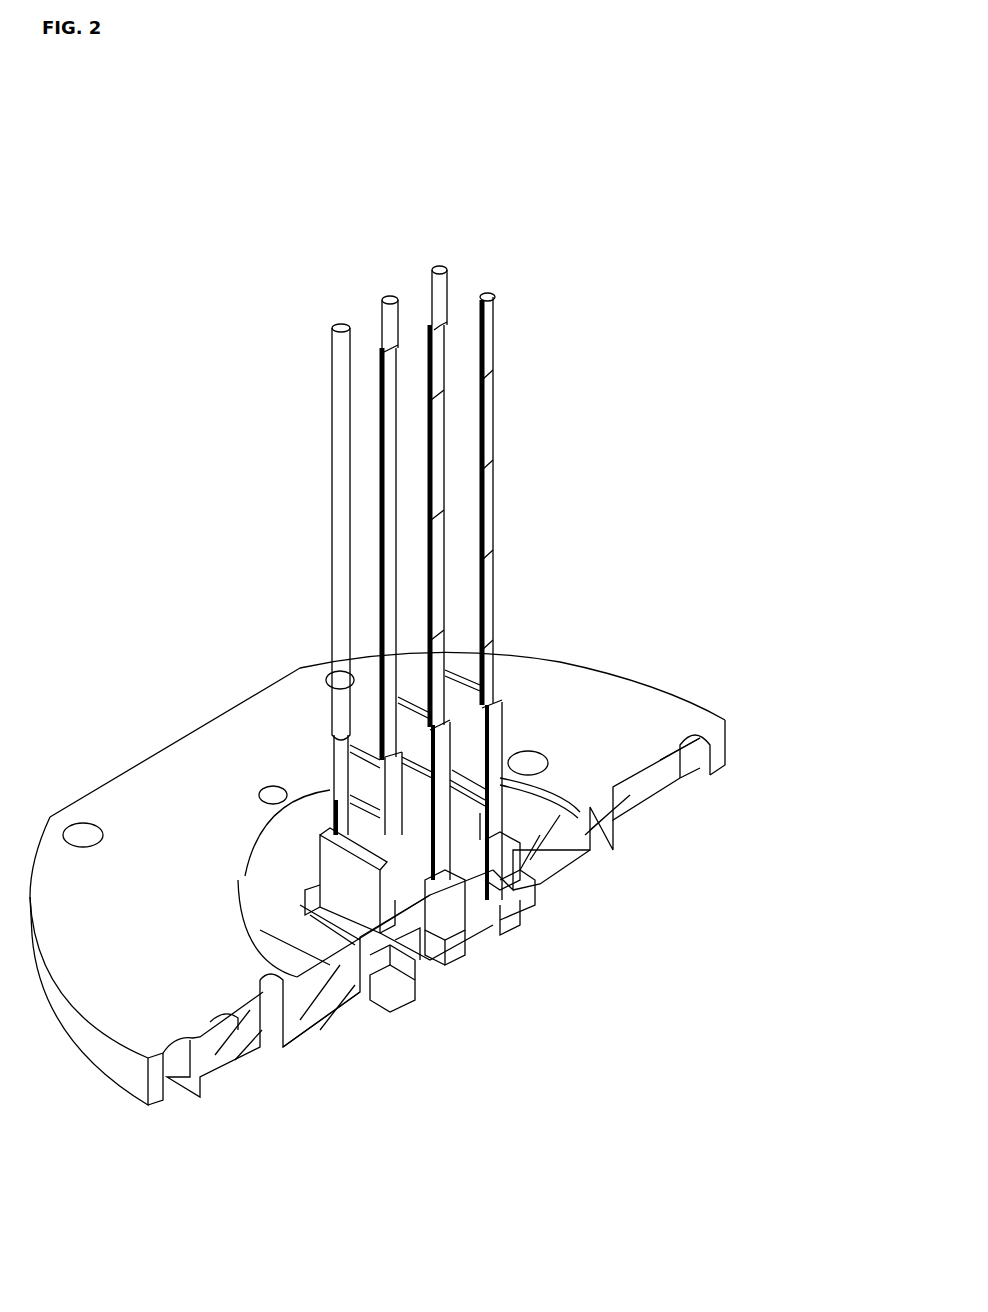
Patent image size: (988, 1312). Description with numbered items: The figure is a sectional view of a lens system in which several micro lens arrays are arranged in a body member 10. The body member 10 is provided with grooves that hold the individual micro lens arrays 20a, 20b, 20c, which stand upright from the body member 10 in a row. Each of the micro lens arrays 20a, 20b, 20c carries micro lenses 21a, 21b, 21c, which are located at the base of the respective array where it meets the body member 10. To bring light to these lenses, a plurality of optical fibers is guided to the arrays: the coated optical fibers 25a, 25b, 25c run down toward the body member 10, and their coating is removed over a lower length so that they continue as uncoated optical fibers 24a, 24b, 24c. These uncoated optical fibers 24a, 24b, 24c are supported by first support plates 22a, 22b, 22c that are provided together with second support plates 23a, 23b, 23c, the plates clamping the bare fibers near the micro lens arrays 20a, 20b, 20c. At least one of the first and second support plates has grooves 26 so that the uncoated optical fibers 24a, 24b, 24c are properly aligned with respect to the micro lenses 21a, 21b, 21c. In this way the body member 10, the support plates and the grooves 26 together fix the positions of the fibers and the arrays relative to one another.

The body member 10 is at (665, 690).
The micro lens array 20a is at (375, 983).
The micro lens array 20b is at (457, 958).
The micro lens array 20c is at (520, 898).
The micro lenses 21a is at (390, 985).
The micro lenses 21b is at (440, 988).
The micro lenses 21c is at (508, 915).
The first support plate 22a is at (328, 727).
The first support plate 22b is at (417, 710).
The first support plate 22c is at (469, 680).
The second support plate 23a is at (398, 973).
The second support plate 23b is at (468, 940).
The second support plate 23c is at (490, 843).
The uncoated optical fiber 24a is at (387, 790).
The uncoated optical fiber 24b is at (433, 763).
The uncoated optical fiber 24c is at (493, 712).
The coated optical fiber 25a is at (380, 348).
The coated optical fiber 25b is at (433, 325).
The coated optical fiber 25c is at (480, 300).
The grooves 26 is at (400, 818).